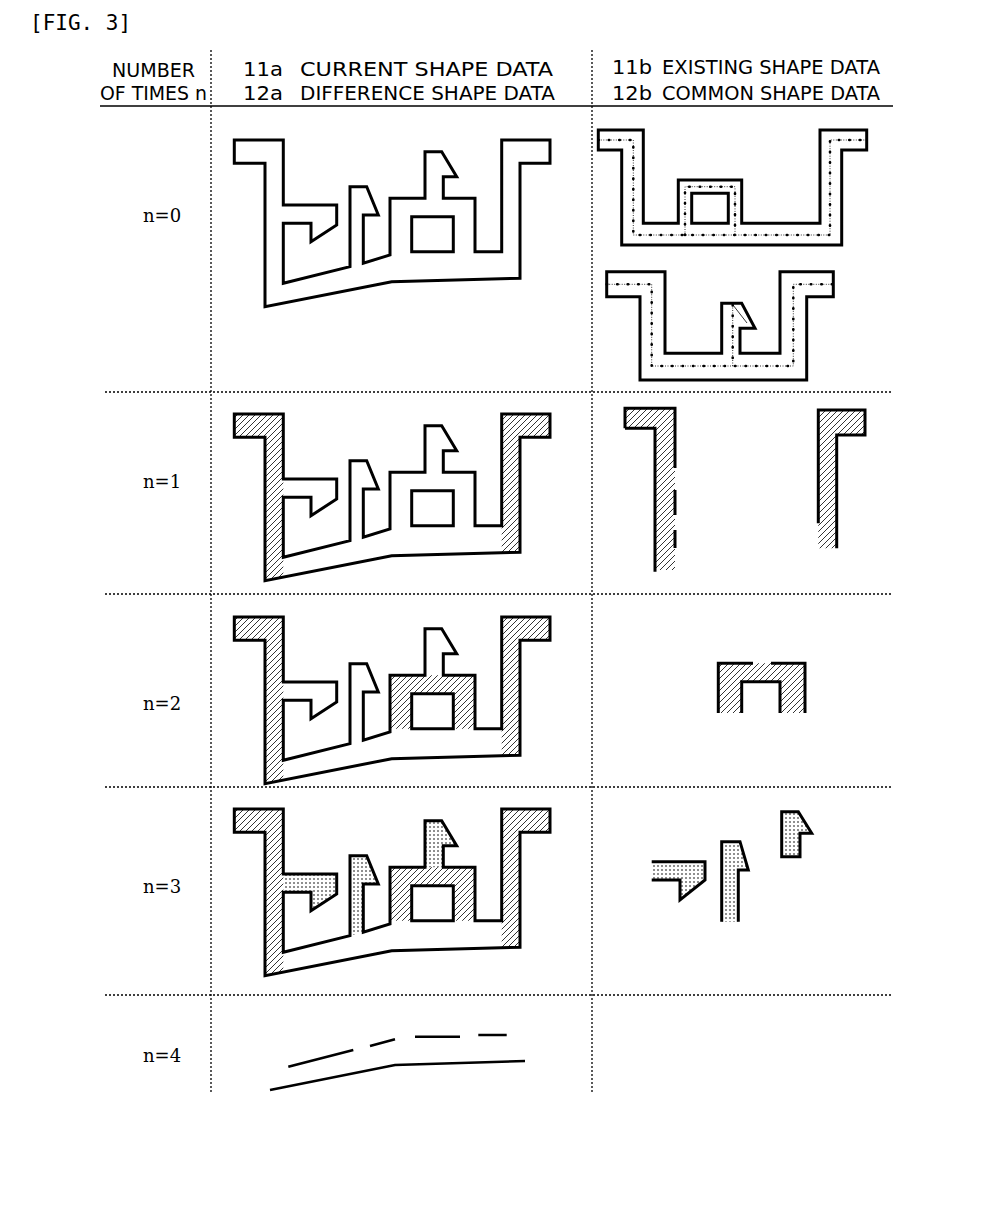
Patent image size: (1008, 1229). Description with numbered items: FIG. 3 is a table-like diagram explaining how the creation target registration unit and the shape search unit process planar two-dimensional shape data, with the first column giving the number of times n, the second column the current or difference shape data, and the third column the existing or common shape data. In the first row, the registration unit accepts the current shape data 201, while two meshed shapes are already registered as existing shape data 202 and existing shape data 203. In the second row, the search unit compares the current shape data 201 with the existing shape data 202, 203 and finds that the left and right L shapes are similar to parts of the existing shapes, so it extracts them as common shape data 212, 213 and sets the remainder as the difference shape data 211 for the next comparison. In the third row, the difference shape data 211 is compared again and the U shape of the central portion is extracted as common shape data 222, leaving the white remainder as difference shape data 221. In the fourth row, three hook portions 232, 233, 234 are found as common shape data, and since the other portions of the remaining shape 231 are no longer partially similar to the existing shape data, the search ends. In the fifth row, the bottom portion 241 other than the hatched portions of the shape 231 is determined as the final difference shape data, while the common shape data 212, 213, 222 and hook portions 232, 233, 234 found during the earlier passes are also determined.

The current shape data 201 is at (284, 163).
The existing shape data 202 is at (645, 153).
The existing shape data 203 is at (665, 297).
The difference shape data 211 is at (392, 497).
The common shape data 212 is at (678, 440).
The common shape data 213 is at (818, 493).
The difference shape data 221 is at (392, 700).
The common shape data 222 is at (807, 682).
The difference shape data 231 is at (392, 892).
The hook portion 232 is at (653, 860).
The hook portion 233 is at (727, 841).
The hook portion 234 is at (803, 850).
The bottom portion 241 is at (510, 1047).